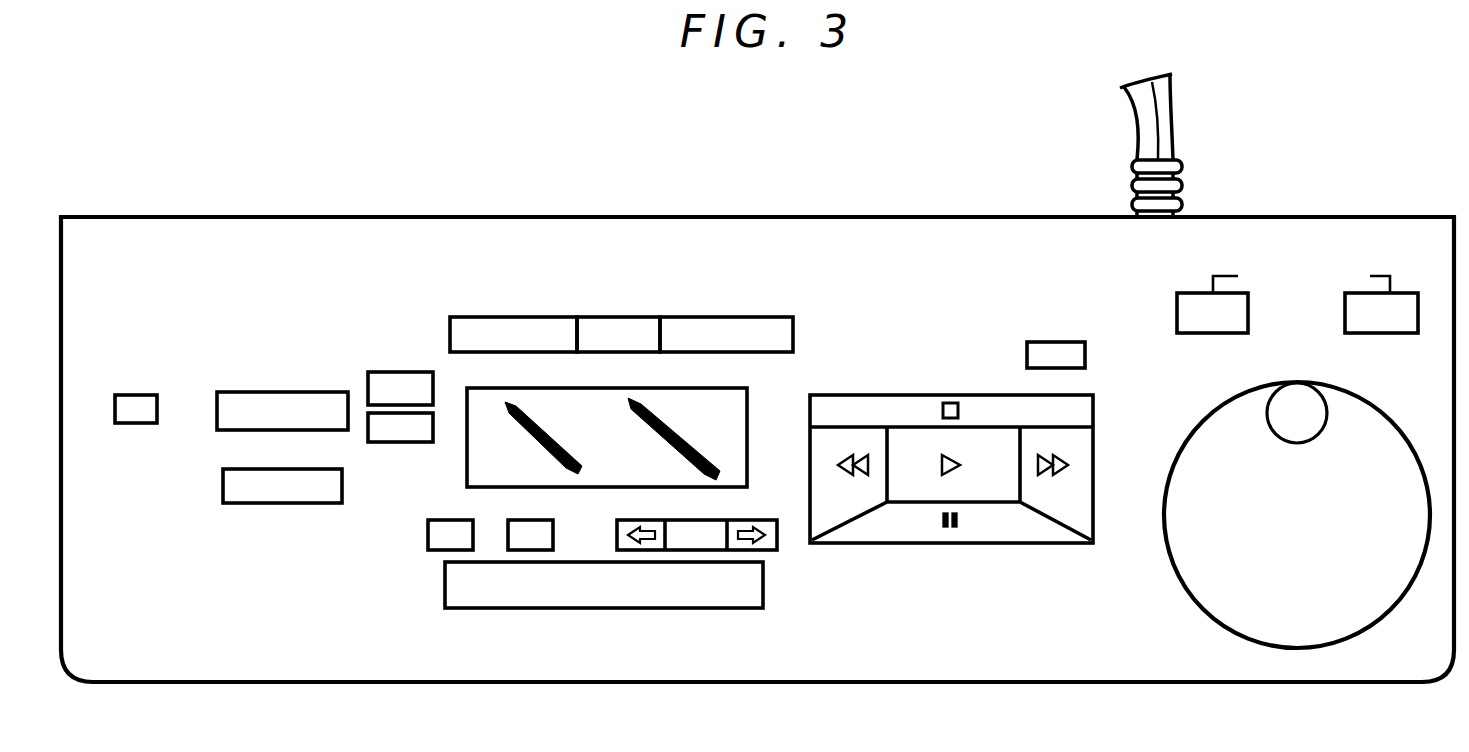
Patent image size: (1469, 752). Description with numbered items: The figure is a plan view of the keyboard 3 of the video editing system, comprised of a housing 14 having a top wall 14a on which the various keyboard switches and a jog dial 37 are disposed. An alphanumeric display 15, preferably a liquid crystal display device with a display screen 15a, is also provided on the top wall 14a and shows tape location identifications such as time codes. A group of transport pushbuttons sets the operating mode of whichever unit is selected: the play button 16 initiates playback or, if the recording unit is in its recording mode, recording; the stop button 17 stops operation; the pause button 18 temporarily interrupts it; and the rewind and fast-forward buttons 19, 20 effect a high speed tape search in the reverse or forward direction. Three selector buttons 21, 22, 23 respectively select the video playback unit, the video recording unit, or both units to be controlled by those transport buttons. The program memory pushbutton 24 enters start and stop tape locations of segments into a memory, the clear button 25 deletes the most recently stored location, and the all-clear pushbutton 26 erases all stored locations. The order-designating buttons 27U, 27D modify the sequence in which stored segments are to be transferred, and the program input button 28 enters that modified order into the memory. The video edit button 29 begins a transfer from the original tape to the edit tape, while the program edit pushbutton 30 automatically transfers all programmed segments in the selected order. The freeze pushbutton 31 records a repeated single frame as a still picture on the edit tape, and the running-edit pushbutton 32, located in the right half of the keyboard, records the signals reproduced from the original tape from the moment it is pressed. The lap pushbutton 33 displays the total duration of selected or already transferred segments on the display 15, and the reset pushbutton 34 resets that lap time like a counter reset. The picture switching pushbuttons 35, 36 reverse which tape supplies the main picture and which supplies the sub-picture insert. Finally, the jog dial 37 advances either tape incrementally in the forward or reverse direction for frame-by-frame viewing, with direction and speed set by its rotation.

The keyboard 3 is at (757, 378).
The housing 14 is at (157, 215).
The top wall 14a is at (320, 238).
The alphanumeric display 15 is at (660, 403).
The display screen 15a is at (735, 440).
The play button 16 is at (925, 492).
The stop button 17 is at (925, 406).
The pause button 18 is at (1017, 540).
The rewind button 19 is at (848, 507).
The fast-forward button 20 is at (984, 466).
The selector button for video playback unit 21 is at (465, 320).
The selector button for video recording unit 22 is at (748, 318).
The selector button for both units 23 is at (607, 320).
The program memory pushbutton 24 is at (570, 607).
The clear button 25 is at (505, 520).
The all-clear pushbutton 26 is at (428, 532).
The order-designating button 27D is at (617, 533).
The order-designating button 27U is at (770, 552).
The program input button 28 is at (696, 548).
The video edit button 29 is at (130, 425).
The program edit pushbutton 30 is at (282, 395).
The freeze pushbutton 31 is at (247, 503).
The running-edit pushbutton 32 is at (1040, 340).
The lap pushbutton 33 is at (392, 372).
The reset pushbutton 34 is at (372, 428).
The picture switching pushbutton 35 is at (1180, 302).
The picture switching pushbutton 36 is at (1407, 333).
The jog dial 37 is at (1200, 603).